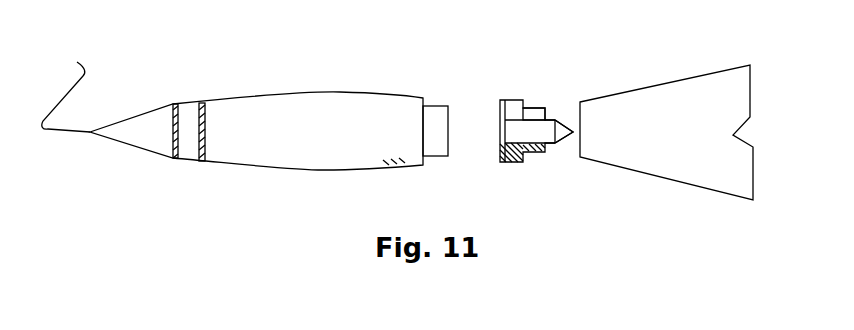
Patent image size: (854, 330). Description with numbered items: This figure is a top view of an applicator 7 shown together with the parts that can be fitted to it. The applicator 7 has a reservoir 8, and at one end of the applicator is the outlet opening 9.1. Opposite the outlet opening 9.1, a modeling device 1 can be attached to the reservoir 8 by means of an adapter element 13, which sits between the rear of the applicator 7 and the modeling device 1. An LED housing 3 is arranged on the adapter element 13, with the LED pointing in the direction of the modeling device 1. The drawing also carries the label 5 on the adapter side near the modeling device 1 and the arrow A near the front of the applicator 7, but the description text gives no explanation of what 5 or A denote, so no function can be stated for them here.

The modeling device 1 is at (633, 122).
The LED housing 3 is at (188, 135).
The tip 5 is at (565, 127).
The applicator 7 is at (306, 78).
The reservoir 8 is at (345, 132).
The outlet opening 9.1 is at (66, 82).
The adapter element 13 is at (500, 100).
The direction arrow A is at (165, 82).